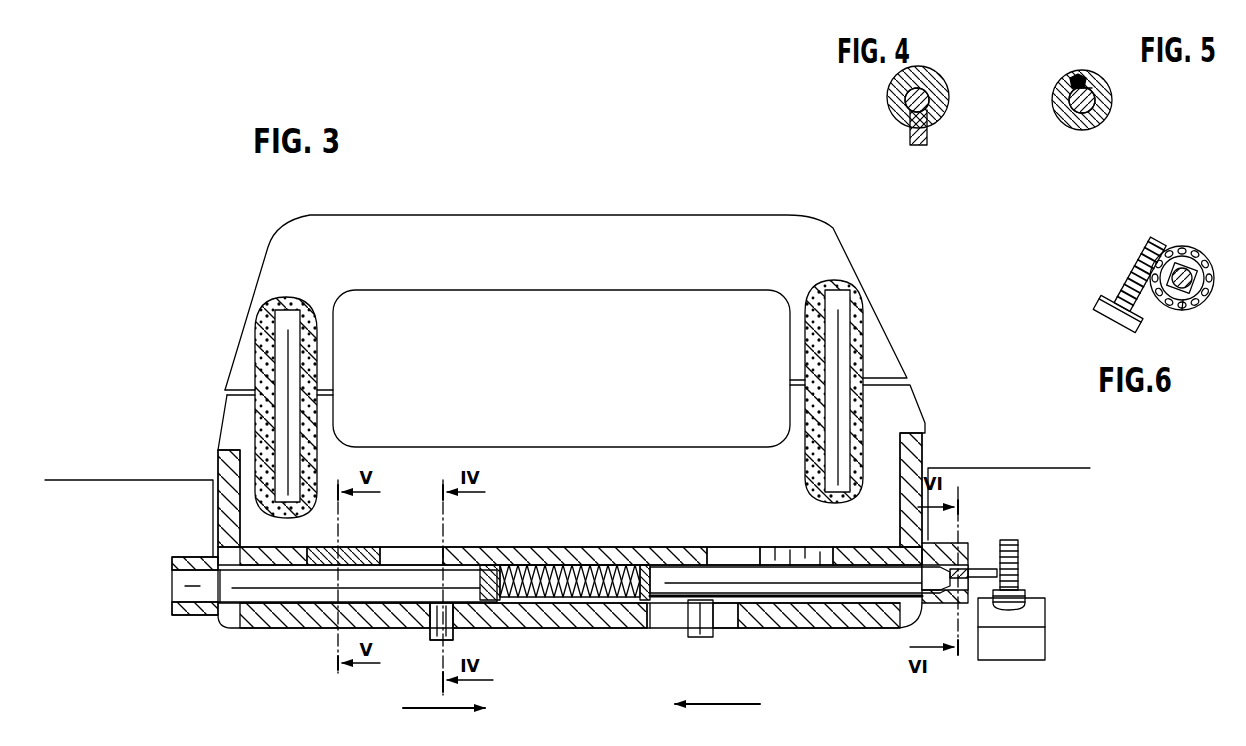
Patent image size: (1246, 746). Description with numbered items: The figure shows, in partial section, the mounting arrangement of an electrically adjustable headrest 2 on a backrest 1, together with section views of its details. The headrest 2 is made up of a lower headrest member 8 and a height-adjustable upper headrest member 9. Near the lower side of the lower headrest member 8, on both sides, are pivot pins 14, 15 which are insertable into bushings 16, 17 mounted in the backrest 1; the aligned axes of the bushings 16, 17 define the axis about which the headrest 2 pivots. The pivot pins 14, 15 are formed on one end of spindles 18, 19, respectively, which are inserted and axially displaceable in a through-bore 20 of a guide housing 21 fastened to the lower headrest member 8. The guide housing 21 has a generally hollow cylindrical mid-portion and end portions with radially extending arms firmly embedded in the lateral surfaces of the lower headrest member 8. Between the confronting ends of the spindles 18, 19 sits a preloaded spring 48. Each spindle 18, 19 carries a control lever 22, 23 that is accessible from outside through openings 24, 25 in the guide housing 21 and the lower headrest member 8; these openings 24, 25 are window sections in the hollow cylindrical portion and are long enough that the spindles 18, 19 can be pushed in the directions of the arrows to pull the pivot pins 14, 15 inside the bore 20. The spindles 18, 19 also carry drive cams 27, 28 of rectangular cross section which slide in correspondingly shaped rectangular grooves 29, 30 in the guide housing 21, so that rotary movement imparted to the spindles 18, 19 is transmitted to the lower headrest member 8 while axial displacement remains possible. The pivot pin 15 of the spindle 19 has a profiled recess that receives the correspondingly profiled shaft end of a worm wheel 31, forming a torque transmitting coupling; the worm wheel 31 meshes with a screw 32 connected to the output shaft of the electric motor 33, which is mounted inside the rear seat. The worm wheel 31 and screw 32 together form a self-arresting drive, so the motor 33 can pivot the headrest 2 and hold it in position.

In FIG. 3, the backrest 1 is at (167, 480).
In FIG. 3, the headrest 2 is at (883, 333).
In FIG. 3, the lower headrest member 8 is at (905, 412).
In FIG. 3, the upper headrest member 9 is at (565, 280).
In FIG. 3, the pivot pin 14 is at (192, 623).
In FIG. 3, the pivot pin 15 is at (920, 612).
In FIG. 6, the pivot pin 15 is at (1200, 258).
In FIG. 3, the bushing 16 is at (174, 620).
In FIG. 6, the bushing 17 is at (1180, 256).
In FIG. 3, the spindle 18 is at (258, 600).
In FIG. 5, the spindle 18 is at (1090, 128).
In FIG. 3, the spindle 19 is at (817, 590).
In FIG. 3, the through-bore 20 is at (558, 597).
In FIG. 3, the guide housing 21 is at (298, 622).
In FIG. 4, the guide housing 21 is at (900, 92).
In FIG. 5, the guide housing 21 is at (1112, 97).
In FIG. 3, the control lever 22 is at (450, 617).
In FIG. 4, the control lever 22 is at (933, 137).
In FIG. 3, the control lever 23 is at (693, 618).
In FIG. 3, the opening 24 is at (415, 626).
In FIG. 4, the opening 24 is at (905, 118).
In FIG. 3, the opening 25 is at (728, 617).
In FIG. 3, the drive cam 27 is at (365, 547).
In FIG. 5, the drive cam 27 is at (1073, 75).
In FIG. 3, the drive cam 28 is at (790, 548).
In FIG. 3, the groove 29 is at (408, 547).
In FIG. 5, the groove 29 is at (1084, 72).
In FIG. 3, the groove 30 is at (722, 548).
In FIG. 3, the worm wheel 31 is at (1018, 548).
In FIG. 6, the worm wheel 31 is at (1183, 312).
In FIG. 3, the screw 32 is at (1030, 598).
In FIG. 6, the screw 32 is at (1125, 250).
In FIG. 3, the electric motor 33 is at (1035, 643).
In FIG. 3, the preloaded spring 48 is at (598, 558).